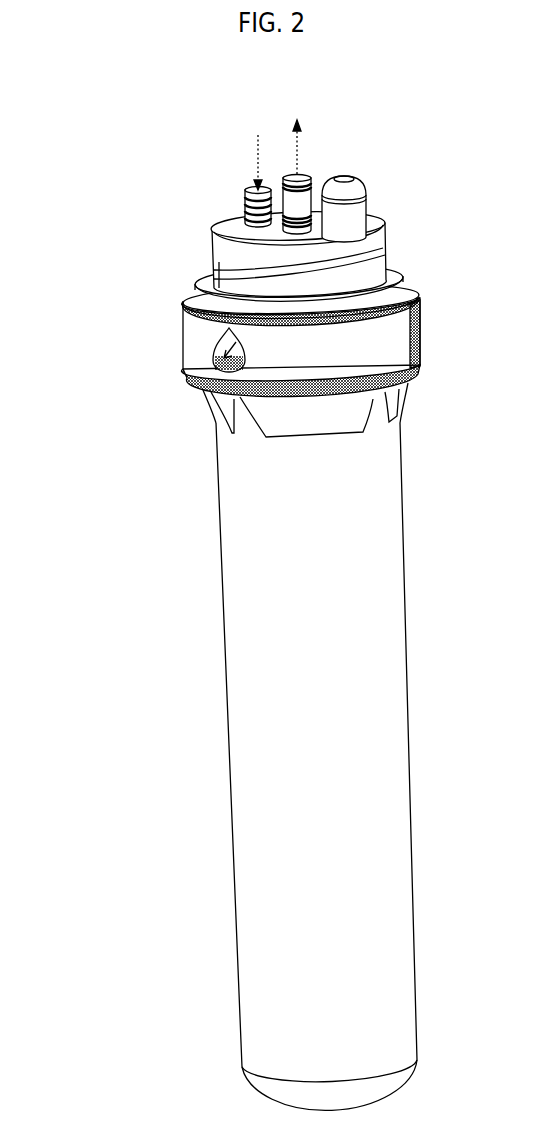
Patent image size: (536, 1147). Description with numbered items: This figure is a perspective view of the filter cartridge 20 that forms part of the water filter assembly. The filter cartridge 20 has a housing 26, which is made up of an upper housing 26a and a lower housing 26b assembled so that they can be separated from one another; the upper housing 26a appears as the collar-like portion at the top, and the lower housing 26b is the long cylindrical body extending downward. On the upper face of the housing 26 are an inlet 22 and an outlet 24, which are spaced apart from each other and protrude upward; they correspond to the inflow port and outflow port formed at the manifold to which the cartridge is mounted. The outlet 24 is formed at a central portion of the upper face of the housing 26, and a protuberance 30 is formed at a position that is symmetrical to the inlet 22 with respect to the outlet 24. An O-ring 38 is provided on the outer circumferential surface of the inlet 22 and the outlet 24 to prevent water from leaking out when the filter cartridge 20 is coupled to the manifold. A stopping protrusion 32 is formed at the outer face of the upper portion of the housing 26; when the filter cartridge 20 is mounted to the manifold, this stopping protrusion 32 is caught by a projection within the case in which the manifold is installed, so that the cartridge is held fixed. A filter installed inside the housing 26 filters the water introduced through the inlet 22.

The filter cartridge 20 is at (254, 605).
The inlet 22 is at (256, 184).
The outlet 24 is at (306, 173).
The housing 26 is at (219, 704).
The upper housing 26a is at (247, 347).
The lower housing 26b is at (220, 487).
The protuberance 30 is at (407, 198).
The stopping protrusion 32 is at (388, 254).
The O-ring 38 is at (244, 200).